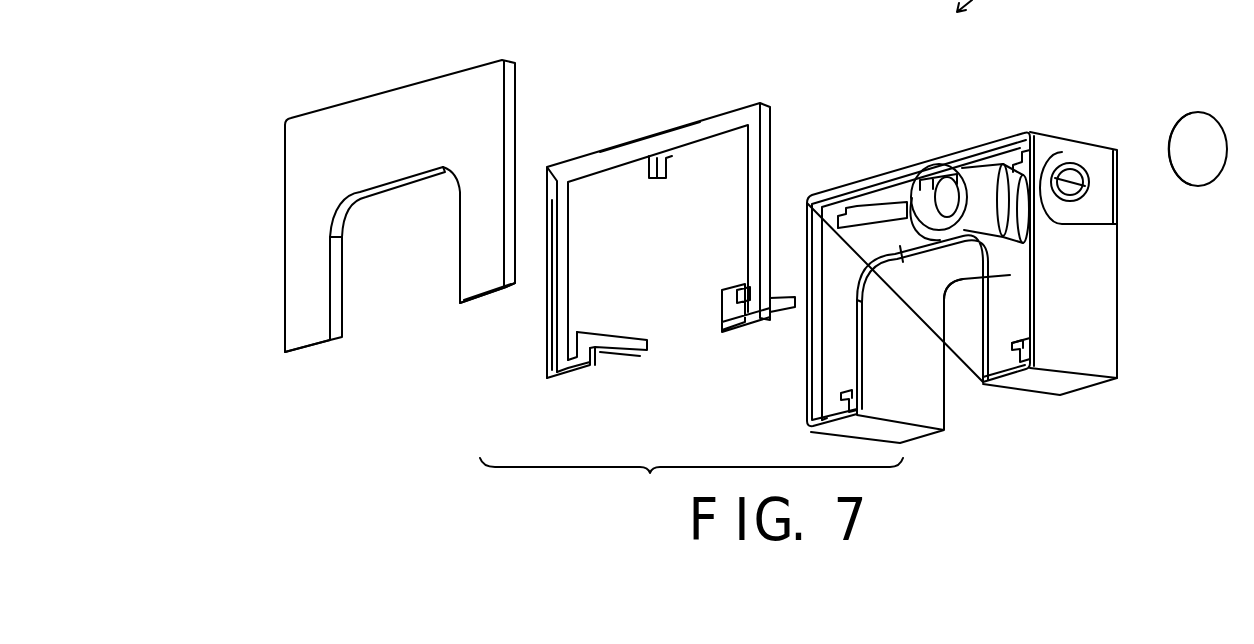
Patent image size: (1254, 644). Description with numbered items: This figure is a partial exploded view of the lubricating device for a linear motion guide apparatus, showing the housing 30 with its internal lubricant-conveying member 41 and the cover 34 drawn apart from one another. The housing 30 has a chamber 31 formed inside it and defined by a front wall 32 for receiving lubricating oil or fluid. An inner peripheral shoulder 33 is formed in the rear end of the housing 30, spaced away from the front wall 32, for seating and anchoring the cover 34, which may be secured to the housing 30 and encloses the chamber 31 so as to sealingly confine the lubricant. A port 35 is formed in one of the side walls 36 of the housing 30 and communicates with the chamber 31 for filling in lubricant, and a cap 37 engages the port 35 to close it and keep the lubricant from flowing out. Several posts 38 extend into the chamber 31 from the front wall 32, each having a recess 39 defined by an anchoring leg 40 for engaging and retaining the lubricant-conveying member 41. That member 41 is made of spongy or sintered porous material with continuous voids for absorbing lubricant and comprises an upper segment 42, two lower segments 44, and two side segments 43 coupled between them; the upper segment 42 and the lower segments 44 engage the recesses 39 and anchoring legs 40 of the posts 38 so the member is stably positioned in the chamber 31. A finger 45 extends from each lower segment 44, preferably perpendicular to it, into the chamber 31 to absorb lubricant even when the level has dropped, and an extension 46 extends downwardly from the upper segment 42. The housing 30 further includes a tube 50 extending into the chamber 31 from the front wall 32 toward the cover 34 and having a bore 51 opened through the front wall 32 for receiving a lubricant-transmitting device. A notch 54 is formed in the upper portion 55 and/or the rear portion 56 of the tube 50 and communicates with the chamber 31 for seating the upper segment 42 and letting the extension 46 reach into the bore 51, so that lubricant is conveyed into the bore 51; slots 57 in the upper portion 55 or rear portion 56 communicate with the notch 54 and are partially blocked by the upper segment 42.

The housing 30 is at (955, 258).
The chamber 31 is at (1018, 308).
The front wall 32 is at (920, 232).
The inner peripheral shoulder 33 is at (903, 245).
The cover 34 is at (338, 113).
The port 35 is at (1090, 202).
The side wall 36 is at (1098, 270).
The cap 37 is at (1192, 127).
The post 38 is at (875, 217).
The recess 39 is at (1020, 354).
The anchoring leg 40 is at (1072, 366).
The lubricant-conveying member 41 is at (634, 245).
The upper segment 42 is at (598, 158).
The side segment 43 is at (545, 318).
The lower segment 44 is at (567, 370).
The finger 45 is at (723, 297).
The extension 46 is at (670, 160).
The tube 50 is at (990, 177).
The bore 51 is at (927, 252).
The notch 54 is at (928, 187).
The upper portion 55 is at (997, 168).
The rear portion 56 is at (900, 218).
The slot 57 is at (957, 172).